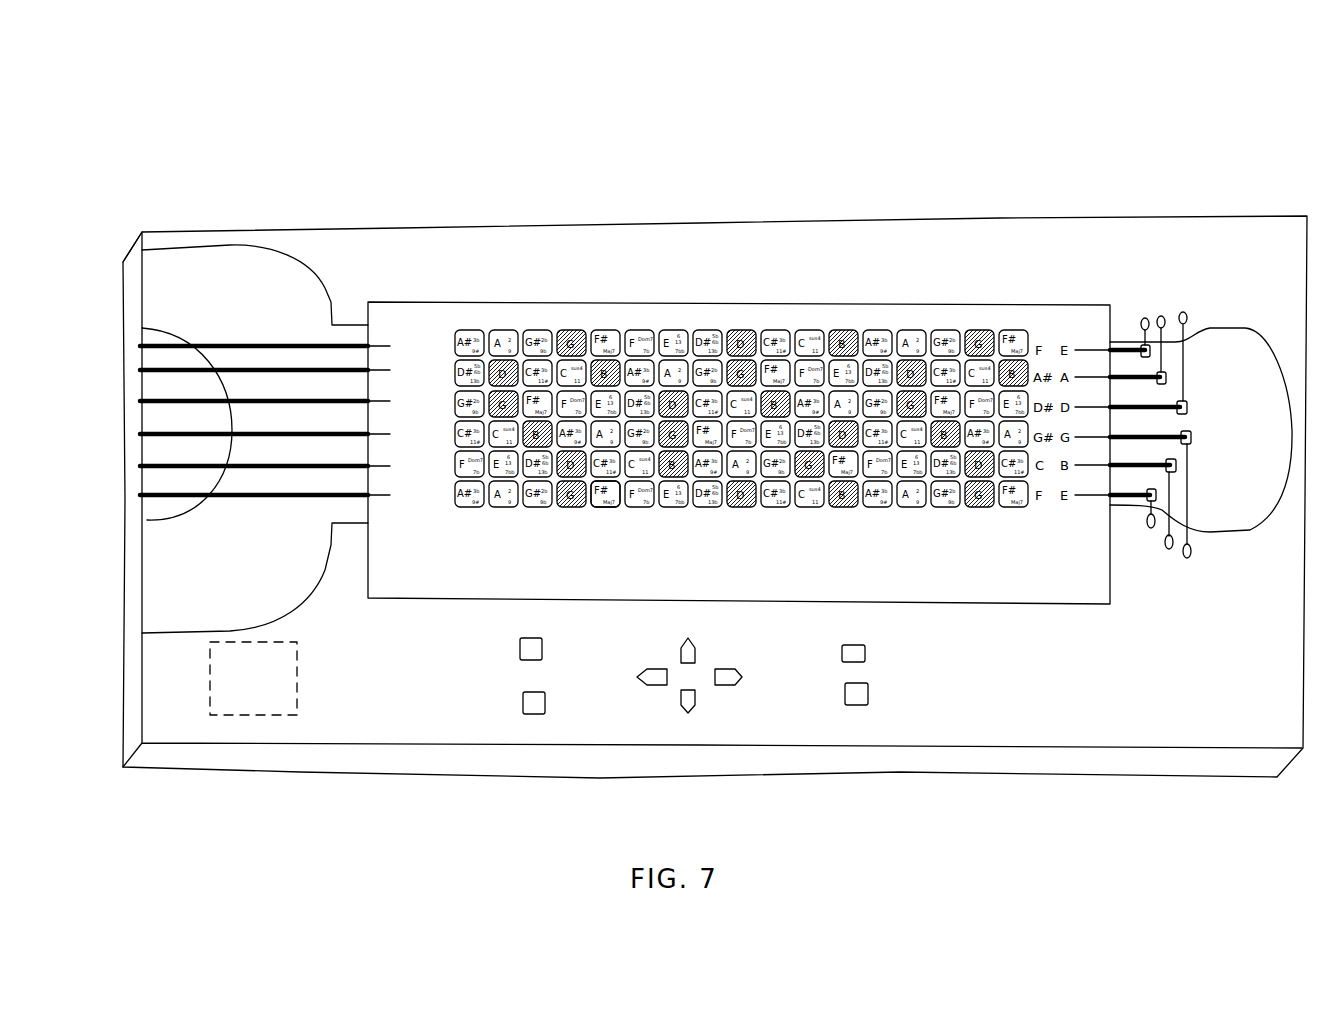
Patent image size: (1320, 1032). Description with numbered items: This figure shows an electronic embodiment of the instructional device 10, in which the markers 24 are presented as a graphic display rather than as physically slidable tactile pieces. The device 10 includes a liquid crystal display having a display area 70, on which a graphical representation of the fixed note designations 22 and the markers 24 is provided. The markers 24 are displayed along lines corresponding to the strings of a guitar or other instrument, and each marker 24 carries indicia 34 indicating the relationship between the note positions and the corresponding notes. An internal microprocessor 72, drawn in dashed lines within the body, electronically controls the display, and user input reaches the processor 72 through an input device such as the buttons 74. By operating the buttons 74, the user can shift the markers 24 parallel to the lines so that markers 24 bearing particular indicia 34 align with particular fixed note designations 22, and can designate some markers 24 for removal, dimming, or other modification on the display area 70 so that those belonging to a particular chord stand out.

The instructional device 10 is at (985, 99).
The fixed note designations 22 is at (438, 507).
The markers 24 is at (778, 332).
The indicia 34 is at (600, 527).
The display area 70 is at (742, 302).
The internal microprocessor 72 is at (237, 715).
The buttons 74 is at (513, 732).